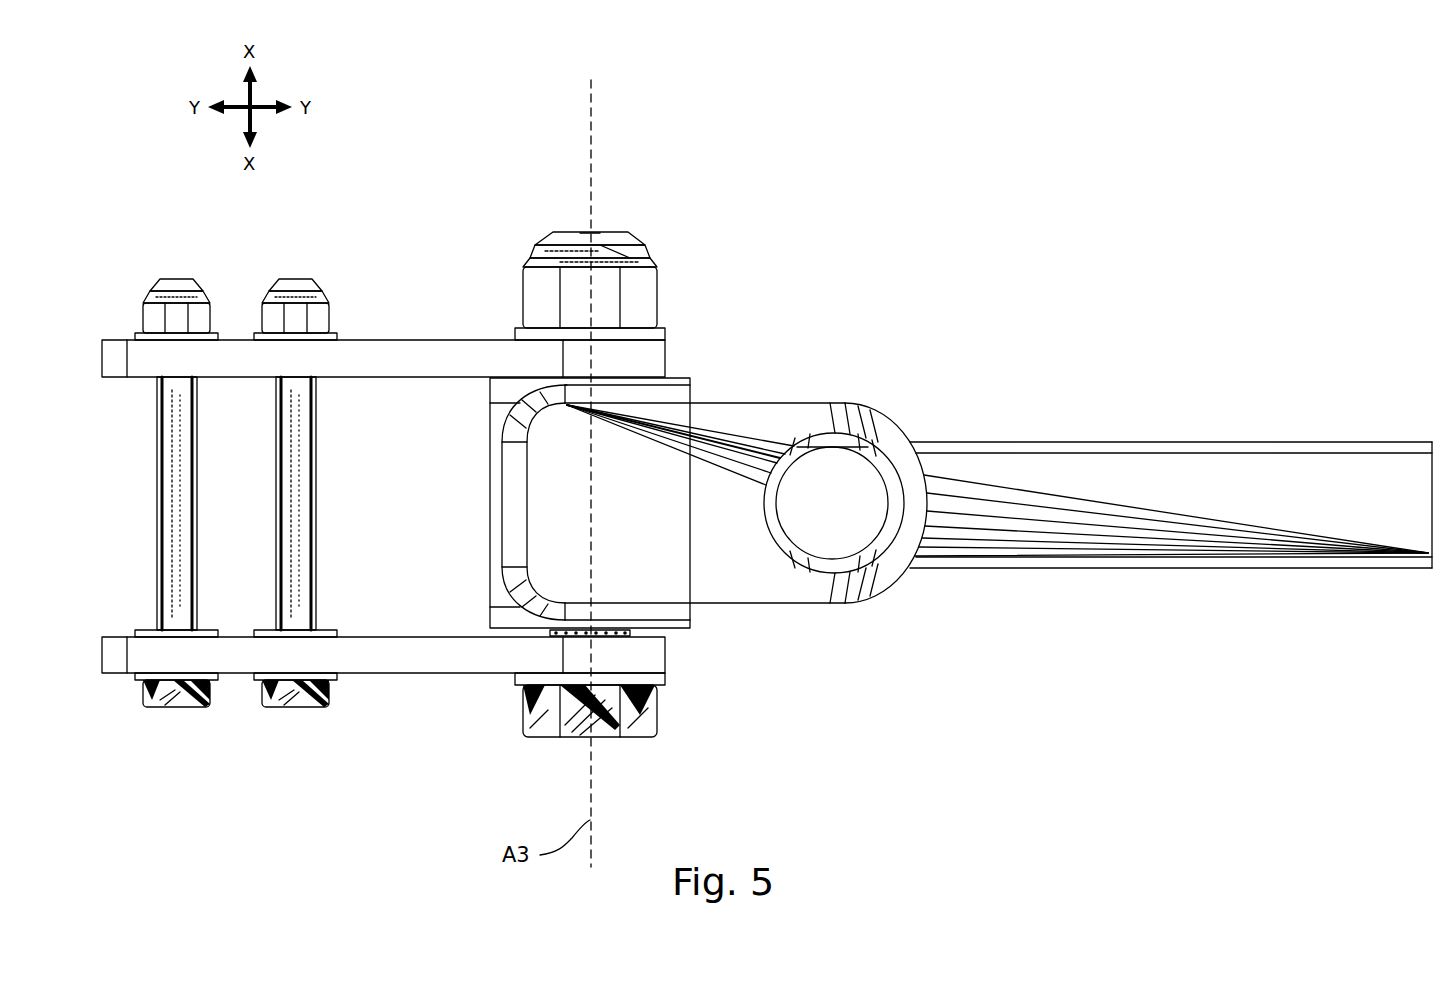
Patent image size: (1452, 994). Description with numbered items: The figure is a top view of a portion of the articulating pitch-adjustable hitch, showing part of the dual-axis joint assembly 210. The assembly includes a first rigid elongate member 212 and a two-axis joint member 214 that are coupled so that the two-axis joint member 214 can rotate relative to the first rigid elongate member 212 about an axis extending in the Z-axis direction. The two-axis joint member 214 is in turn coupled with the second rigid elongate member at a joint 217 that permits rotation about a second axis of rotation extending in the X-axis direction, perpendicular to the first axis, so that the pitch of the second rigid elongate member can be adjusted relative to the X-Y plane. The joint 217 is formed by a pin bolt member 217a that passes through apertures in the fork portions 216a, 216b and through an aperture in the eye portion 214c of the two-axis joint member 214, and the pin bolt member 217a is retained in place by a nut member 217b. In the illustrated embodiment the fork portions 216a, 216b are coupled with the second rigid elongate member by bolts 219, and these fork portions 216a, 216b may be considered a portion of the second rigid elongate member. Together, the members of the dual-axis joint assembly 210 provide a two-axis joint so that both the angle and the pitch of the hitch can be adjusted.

The dual-axis joint assembly 210 is at (1145, 160).
The first rigid elongate member 212 is at (1360, 442).
The two-axis joint member 214 is at (737, 402).
The eye portion 214c is at (548, 510).
The fork portion 216a is at (517, 358).
The fork portion 216b is at (537, 655).
The joint 217 is at (516, 258).
The pin bolt member 217a is at (615, 742).
The nut member 217b is at (609, 230).
The bolts 219 is at (275, 551).